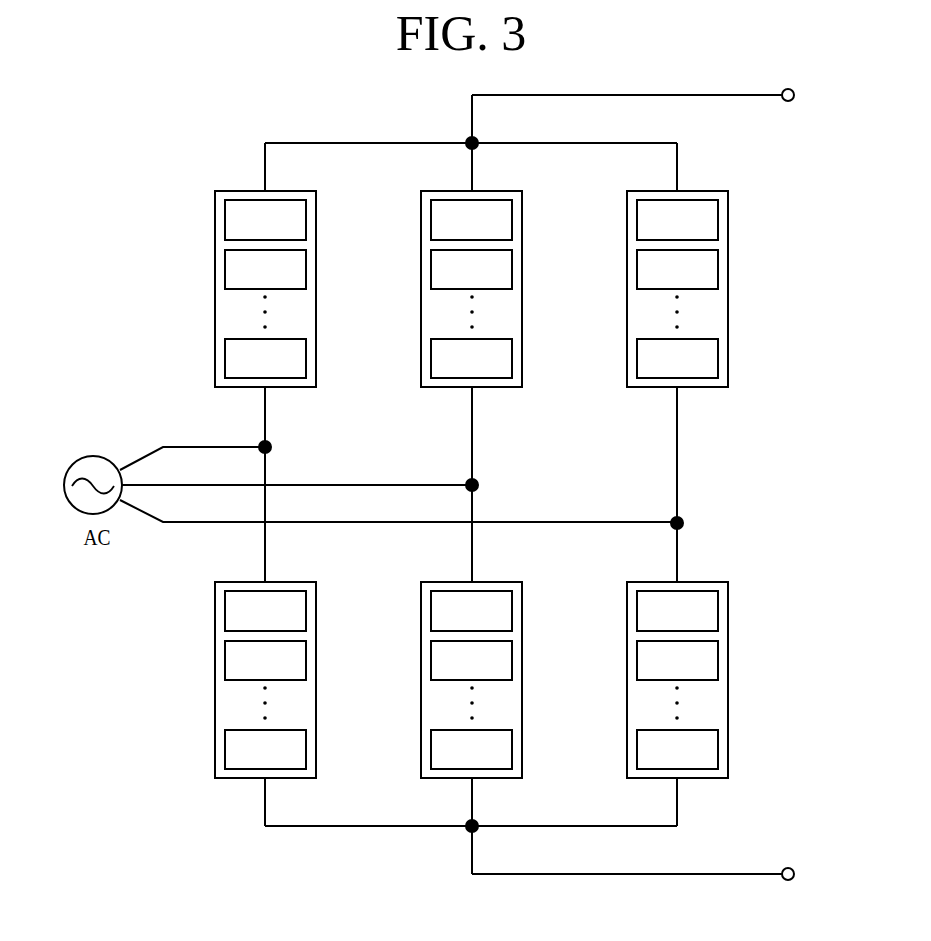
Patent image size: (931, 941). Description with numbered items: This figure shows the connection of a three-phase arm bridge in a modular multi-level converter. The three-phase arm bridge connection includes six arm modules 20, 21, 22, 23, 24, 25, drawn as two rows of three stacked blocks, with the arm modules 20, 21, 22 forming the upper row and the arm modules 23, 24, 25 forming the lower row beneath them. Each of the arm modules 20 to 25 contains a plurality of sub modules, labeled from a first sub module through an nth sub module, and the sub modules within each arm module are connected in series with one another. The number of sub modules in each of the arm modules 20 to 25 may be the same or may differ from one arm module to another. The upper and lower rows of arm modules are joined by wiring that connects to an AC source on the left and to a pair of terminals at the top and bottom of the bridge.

The arm module 20 is at (316, 289).
The arm module 21 is at (522, 289).
The arm module 22 is at (728, 289).
The arm module 23 is at (316, 680).
The arm module 24 is at (522, 680).
The arm module 25 is at (728, 680).